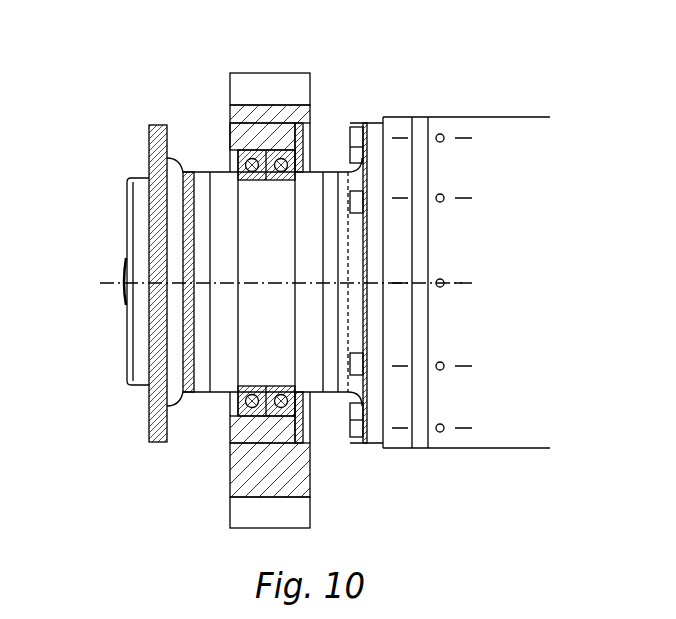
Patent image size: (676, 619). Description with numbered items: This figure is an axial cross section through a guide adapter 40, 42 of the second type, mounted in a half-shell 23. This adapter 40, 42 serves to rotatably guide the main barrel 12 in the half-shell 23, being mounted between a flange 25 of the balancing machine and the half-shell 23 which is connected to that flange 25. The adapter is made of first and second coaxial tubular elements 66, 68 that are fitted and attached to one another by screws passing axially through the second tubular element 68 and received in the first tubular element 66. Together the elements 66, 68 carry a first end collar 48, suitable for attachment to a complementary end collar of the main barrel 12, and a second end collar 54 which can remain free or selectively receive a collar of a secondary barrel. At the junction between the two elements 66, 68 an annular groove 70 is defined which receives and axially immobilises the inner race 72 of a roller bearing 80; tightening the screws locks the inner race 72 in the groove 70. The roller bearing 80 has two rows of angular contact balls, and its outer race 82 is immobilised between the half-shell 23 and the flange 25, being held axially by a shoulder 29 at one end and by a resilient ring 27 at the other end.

The main barrel 12 is at (489, 282).
The half-shell 23 is at (263, 87).
The flange 25 is at (300, 473).
The resilient ring 27 is at (312, 128).
The shoulder 29 is at (235, 153).
The guide adapter 40 is at (192, 92).
The guide adapter 42 is at (192, 92).
The first end collar 48 is at (378, 176).
The second end collar 54 is at (157, 417).
The first tubular element 66 is at (208, 393).
The second tubular element 68 is at (327, 393).
The annular groove 70 is at (345, 175).
The inner race 72 is at (258, 388).
The roller bearing 80 is at (273, 230).
The outer race 82 is at (255, 165).